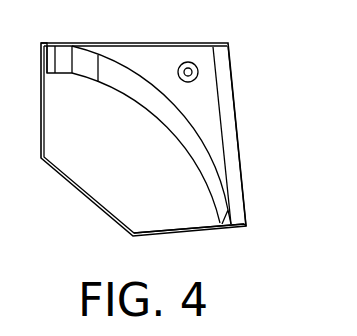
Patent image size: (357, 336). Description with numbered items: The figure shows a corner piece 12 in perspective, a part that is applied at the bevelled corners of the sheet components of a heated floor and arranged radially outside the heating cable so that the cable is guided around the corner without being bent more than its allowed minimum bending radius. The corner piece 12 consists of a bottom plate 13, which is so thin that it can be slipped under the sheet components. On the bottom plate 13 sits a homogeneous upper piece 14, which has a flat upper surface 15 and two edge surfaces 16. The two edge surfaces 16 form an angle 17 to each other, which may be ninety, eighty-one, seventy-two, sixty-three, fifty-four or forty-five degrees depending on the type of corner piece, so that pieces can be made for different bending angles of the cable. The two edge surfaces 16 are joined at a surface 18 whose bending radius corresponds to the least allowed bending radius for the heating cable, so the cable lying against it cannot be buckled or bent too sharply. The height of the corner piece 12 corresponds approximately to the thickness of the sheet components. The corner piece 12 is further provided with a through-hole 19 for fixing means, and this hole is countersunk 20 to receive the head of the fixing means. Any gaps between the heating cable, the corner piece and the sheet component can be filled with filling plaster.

The corner piece 12 is at (98, 212).
The bottom plate 13 is at (176, 217).
The homogeneous upper piece 14 is at (214, 125).
The flat upper surface 15 is at (153, 65).
The edge surfaces 16 is at (50, 43).
The angle 17 is at (228, 46).
The surface 18 is at (88, 72).
The through-holes 19 is at (194, 62).
The countersunk 20 is at (186, 62).